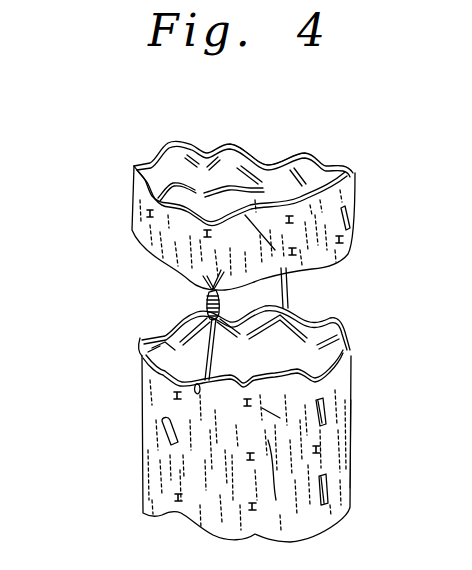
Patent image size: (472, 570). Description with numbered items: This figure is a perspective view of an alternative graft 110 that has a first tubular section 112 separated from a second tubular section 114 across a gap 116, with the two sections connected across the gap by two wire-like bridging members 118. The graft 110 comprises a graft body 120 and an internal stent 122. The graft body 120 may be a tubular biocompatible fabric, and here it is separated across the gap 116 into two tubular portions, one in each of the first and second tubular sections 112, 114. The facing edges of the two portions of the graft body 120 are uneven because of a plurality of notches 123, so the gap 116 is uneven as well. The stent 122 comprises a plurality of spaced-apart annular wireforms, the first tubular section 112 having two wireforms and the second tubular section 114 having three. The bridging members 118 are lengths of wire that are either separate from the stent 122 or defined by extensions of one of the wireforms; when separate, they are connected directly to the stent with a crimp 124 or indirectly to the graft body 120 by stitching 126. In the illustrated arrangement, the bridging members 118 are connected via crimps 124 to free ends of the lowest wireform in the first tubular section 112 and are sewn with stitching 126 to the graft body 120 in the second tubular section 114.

The graft 110 is at (138, 132).
The first tubular section 112 is at (81, 142).
The second tubular section 114 is at (81, 340).
The gap 116 is at (81, 240).
The bridging members 118 is at (284, 292).
The graft body 120 is at (343, 471).
The internal stent 122 is at (262, 160).
The notches 123 is at (315, 318).
The crimp 124 is at (208, 302).
The stitching 126 is at (200, 389).